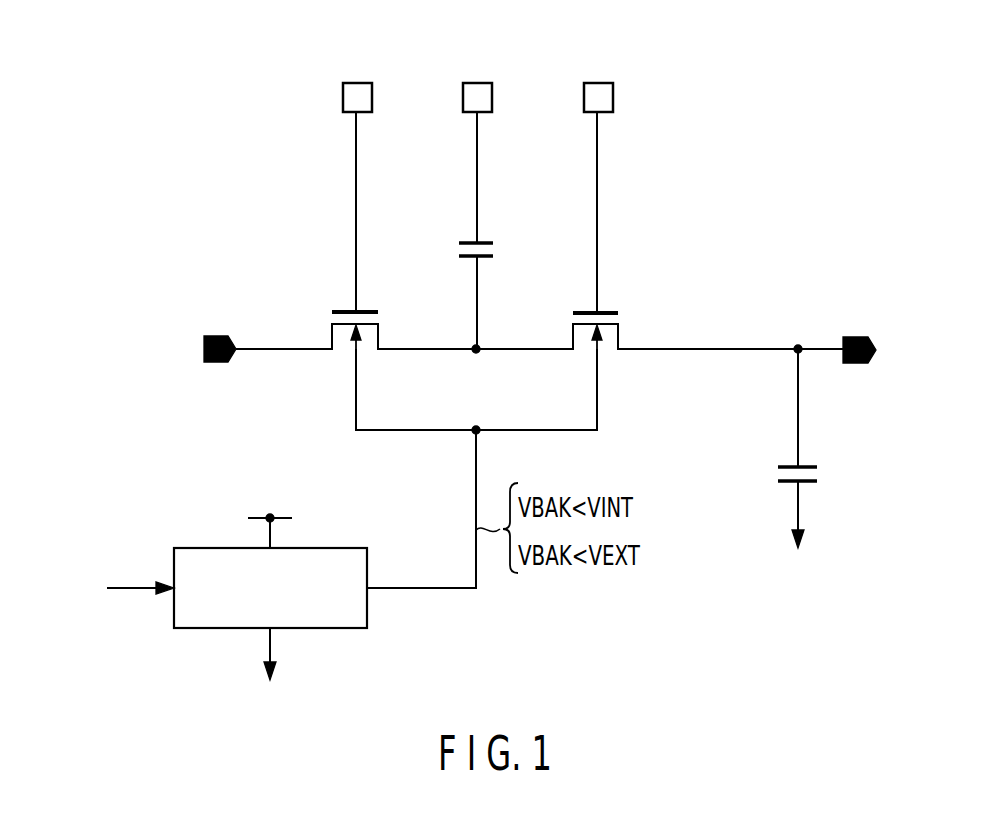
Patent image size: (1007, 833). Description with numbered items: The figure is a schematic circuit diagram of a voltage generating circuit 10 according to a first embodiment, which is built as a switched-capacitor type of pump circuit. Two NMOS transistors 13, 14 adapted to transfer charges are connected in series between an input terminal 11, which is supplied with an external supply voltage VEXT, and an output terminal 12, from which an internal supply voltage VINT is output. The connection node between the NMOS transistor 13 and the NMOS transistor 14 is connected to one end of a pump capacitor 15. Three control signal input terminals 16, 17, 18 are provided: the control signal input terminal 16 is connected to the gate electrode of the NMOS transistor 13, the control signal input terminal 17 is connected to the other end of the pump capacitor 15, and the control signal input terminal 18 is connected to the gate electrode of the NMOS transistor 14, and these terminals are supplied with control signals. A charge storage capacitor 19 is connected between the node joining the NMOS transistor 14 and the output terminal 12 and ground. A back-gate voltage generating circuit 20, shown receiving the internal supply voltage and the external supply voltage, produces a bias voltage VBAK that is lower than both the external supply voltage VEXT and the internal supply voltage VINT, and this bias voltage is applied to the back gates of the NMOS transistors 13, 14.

The voltage generating circuit 10 is at (780, 203).
The input terminal 11 is at (219, 336).
The output terminal 12 is at (861, 337).
The NMOS transistor 13 is at (332, 326).
The NMOS transistor 14 is at (620, 330).
The pump capacitor 15 is at (497, 250).
The control signal input terminal 16 is at (357, 83).
The control signal input terminal 17 is at (478, 83).
The control signal input terminal 18 is at (599, 83).
The charge storage capacitor 19 is at (822, 477).
The back-gate voltage generating circuit 20 is at (352, 548).